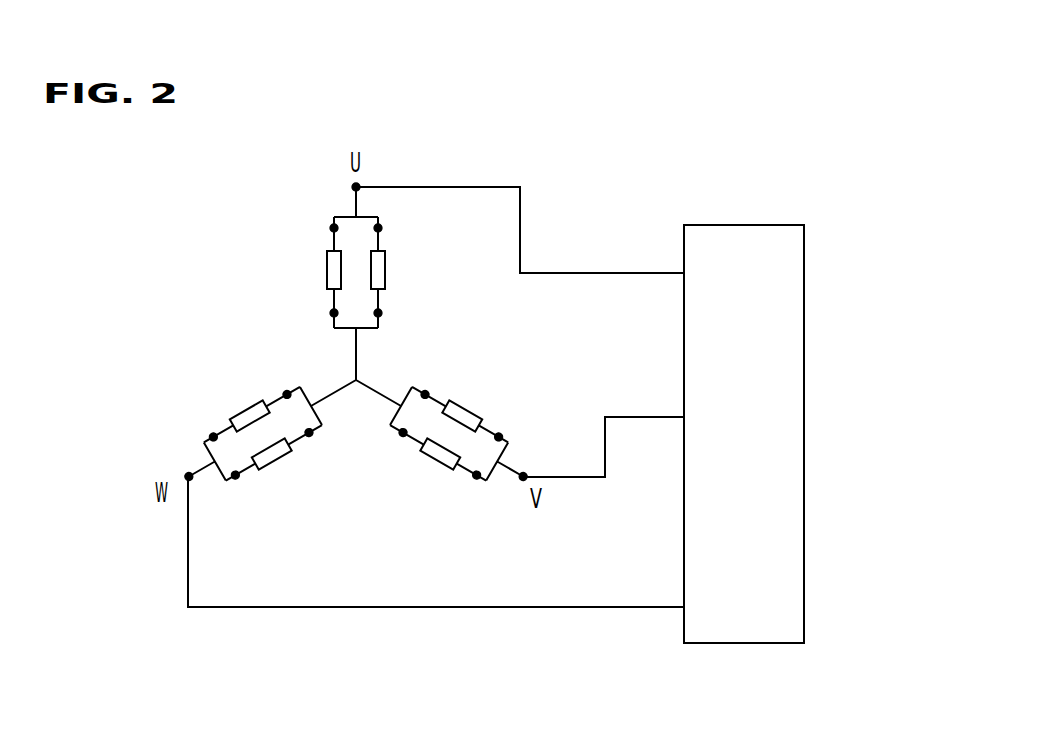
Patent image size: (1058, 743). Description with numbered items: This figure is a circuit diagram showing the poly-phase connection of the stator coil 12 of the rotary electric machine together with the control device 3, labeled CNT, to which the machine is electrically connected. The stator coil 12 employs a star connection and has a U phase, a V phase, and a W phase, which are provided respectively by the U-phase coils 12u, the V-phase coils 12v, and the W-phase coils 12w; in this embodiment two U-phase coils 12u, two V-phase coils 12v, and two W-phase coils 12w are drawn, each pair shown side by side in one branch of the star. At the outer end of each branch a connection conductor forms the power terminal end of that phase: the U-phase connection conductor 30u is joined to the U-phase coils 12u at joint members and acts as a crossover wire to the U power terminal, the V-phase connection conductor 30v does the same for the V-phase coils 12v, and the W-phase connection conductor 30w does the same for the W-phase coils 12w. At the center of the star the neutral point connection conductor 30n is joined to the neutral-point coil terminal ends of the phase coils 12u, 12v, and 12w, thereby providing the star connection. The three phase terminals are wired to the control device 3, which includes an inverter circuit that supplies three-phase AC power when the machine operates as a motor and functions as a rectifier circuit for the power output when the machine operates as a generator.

The control device 3 is at (805, 343).
The stator coil 12 is at (208, 285).
The U-phase coil 12u is at (326, 270).
The V-phase coil 12v is at (460, 403).
The W-phase coil 12w is at (248, 402).
The U-phase connection conductor 30u is at (343, 215).
The V-phase connection conductor 30v is at (498, 463).
The W-phase connection conductor 30w is at (207, 463).
The neutral point connection conductor 30n is at (365, 392).